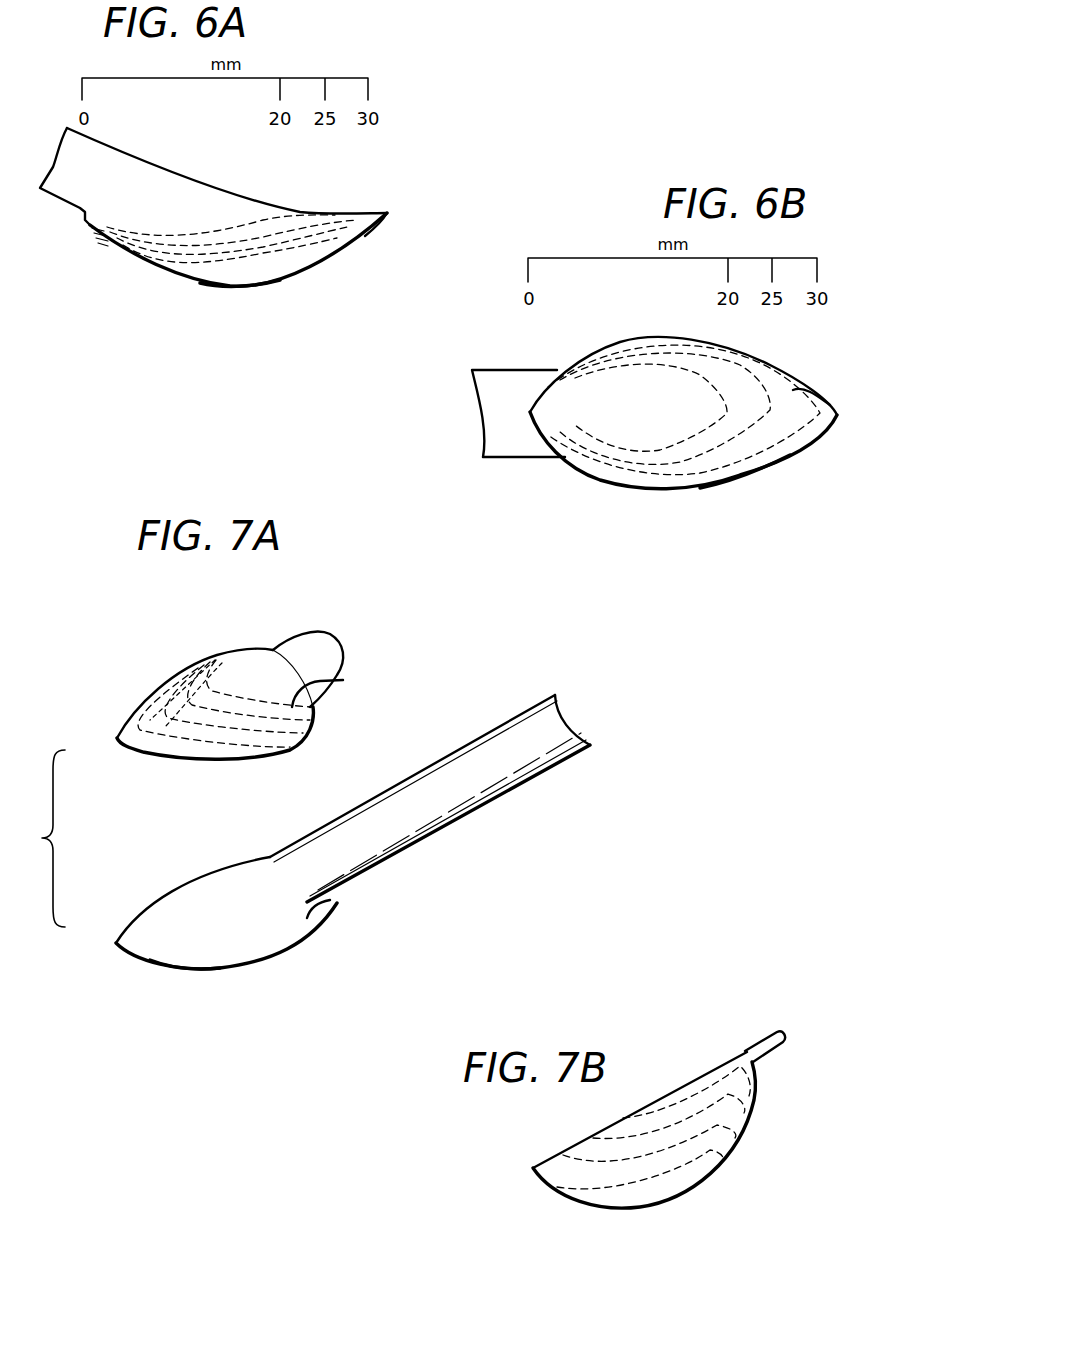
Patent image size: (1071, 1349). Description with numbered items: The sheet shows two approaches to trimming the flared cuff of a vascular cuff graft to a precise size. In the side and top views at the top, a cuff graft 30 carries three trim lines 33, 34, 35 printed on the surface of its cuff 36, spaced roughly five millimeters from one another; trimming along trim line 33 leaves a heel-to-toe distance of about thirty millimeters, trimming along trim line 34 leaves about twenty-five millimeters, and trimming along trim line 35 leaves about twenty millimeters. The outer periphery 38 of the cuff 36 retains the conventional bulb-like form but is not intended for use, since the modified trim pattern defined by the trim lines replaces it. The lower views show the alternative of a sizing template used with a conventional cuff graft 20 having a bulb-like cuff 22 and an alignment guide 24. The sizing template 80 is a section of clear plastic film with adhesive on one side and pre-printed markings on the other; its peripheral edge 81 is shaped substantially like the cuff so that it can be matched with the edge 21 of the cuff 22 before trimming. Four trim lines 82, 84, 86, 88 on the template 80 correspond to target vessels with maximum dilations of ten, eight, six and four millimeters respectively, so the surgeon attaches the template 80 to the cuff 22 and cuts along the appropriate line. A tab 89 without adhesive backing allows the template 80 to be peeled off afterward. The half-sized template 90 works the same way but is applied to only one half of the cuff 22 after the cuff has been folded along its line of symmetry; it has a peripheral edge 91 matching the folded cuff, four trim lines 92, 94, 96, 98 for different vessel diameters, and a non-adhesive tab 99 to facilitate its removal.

In FIG. 6A, the cuff graft 30 is at (258, 229).
In FIG. 6B, the cuff graft 30 is at (658, 424).
In FIG. 6A, the trim line 33 is at (337, 235).
In FIG. 6B, the trim line 33 is at (793, 390).
In FIG. 6A, the trim line 34 is at (215, 252).
In FIG. 6B, the trim line 34 is at (693, 463).
In FIG. 6A, the trim line 35 is at (173, 238).
In FIG. 6B, the trim line 35 is at (636, 460).
In FIG. 6A, the cuff 36 is at (273, 287).
In FIG. 6B, the cuff 36 is at (747, 483).
In FIG. 6A, the outer periphery 38 is at (128, 252).
In FIG. 6B, the outer periphery 38 is at (622, 337).
In FIG. 7A, the cuff graft 20 is at (348, 869).
In FIG. 7A, the edge of the cuff 21 is at (142, 910).
In FIG. 7A, the cuff 22 is at (177, 972).
In FIG. 7A, the alignment guide 24 is at (428, 847).
In FIG. 7A, the sizing template 80 is at (236, 696).
In FIG. 7A, the peripheral edge 81 is at (140, 705).
In FIG. 7A, the trim line 82 is at (193, 745).
In FIG. 7A, the trim line 84 is at (245, 735).
In FIG. 7A, the trim line 86 is at (285, 720).
In FIG. 7A, the trim line 88 is at (343, 680).
In FIG. 7A, the tab 89 is at (310, 645).
In FIG. 7B, the half-sized template 90 is at (657, 1105).
In FIG. 7B, the peripheral edge 91 is at (560, 1197).
In FIG. 7B, the trim line 92 is at (630, 1188).
In FIG. 7B, the trim line 94 is at (660, 1157).
In FIG. 7B, the trim line 96 is at (700, 1110).
In FIG. 7B, the trim line 98 is at (727, 1073).
In FIG. 7B, the tab 99 is at (767, 1048).